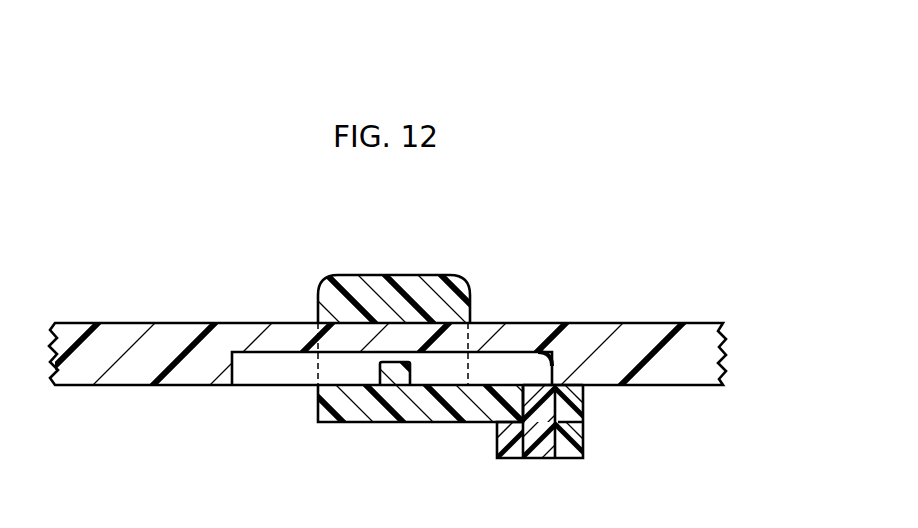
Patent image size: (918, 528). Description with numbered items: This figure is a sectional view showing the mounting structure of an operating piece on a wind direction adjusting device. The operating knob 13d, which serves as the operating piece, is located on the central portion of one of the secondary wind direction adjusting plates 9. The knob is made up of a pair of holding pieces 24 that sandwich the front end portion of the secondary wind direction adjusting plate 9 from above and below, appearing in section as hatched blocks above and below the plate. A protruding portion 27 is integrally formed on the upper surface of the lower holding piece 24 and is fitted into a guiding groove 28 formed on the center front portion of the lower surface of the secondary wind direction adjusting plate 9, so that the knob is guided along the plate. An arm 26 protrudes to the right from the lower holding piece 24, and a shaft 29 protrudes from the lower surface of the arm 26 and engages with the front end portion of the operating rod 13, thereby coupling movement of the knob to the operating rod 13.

The secondary wind direction adjusting plate 9 is at (691, 340).
The operating rod 13 is at (541, 438).
The operating knob 13d is at (356, 283).
The holding piece 24 is at (426, 345).
The arm 26 is at (579, 401).
The protruding portion 27 is at (380, 378).
The guiding groove 28 is at (540, 352).
The shaft 29 is at (497, 437).